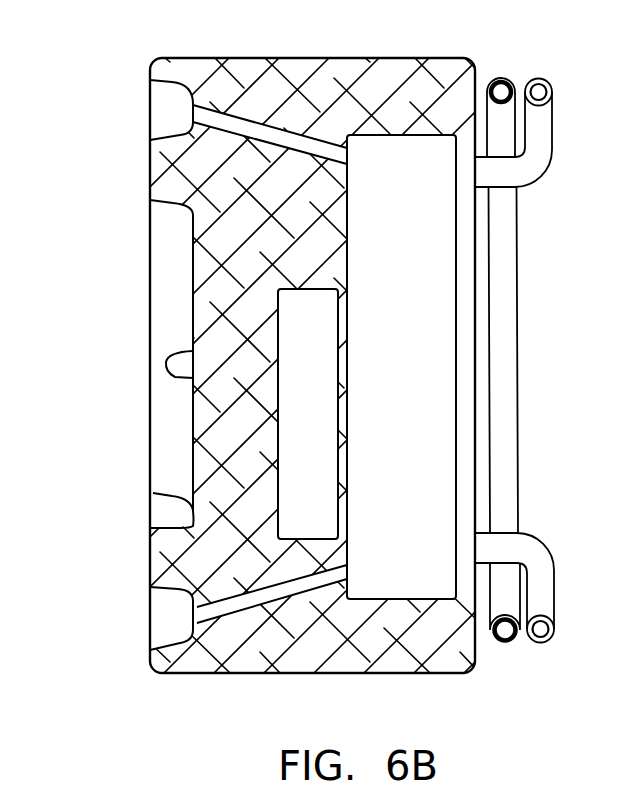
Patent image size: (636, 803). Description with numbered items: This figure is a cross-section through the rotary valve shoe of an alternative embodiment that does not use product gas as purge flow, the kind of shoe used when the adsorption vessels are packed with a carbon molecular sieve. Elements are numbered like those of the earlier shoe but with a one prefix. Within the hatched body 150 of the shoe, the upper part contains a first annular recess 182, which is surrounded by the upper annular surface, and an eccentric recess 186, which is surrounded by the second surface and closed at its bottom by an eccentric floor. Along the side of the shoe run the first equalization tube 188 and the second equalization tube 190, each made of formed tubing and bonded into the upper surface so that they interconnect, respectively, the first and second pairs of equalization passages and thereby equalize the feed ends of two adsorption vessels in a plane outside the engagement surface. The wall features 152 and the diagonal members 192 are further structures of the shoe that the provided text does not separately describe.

The housing assembly 150 is at (358, 58).
The corrugated side wall 152 is at (150, 94).
The first annular recess 182 is at (425, 303).
The eccentric recess 186 is at (330, 399).
The first equalization tube 188 is at (502, 643).
The second equalization tube 190 is at (545, 642).
The diagonal strut 192 is at (245, 116).